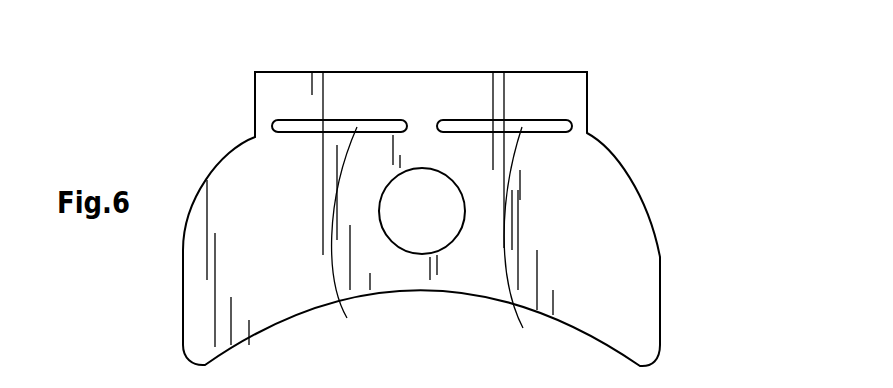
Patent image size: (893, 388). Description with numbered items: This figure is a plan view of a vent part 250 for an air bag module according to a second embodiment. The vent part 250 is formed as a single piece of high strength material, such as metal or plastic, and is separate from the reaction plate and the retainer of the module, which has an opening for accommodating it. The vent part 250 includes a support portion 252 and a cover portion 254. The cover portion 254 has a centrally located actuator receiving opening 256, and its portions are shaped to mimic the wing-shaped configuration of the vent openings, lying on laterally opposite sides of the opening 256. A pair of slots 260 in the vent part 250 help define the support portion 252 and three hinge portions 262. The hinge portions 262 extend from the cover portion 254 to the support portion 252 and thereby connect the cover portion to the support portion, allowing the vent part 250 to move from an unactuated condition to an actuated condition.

The vent part 250 is at (180, 145).
The support portion 252 is at (418, 80).
The cover portion 254 is at (618, 280).
The actuator receiving opening 256 is at (427, 225).
The slots 260 is at (435, 245).
The hinge portions 262 is at (265, 117).